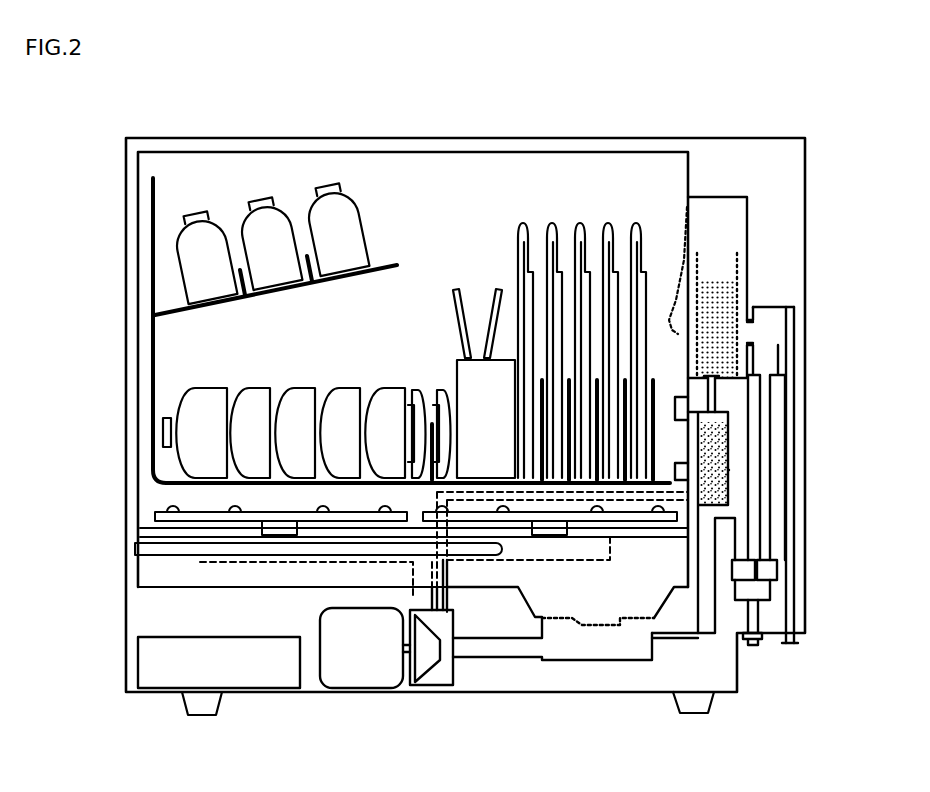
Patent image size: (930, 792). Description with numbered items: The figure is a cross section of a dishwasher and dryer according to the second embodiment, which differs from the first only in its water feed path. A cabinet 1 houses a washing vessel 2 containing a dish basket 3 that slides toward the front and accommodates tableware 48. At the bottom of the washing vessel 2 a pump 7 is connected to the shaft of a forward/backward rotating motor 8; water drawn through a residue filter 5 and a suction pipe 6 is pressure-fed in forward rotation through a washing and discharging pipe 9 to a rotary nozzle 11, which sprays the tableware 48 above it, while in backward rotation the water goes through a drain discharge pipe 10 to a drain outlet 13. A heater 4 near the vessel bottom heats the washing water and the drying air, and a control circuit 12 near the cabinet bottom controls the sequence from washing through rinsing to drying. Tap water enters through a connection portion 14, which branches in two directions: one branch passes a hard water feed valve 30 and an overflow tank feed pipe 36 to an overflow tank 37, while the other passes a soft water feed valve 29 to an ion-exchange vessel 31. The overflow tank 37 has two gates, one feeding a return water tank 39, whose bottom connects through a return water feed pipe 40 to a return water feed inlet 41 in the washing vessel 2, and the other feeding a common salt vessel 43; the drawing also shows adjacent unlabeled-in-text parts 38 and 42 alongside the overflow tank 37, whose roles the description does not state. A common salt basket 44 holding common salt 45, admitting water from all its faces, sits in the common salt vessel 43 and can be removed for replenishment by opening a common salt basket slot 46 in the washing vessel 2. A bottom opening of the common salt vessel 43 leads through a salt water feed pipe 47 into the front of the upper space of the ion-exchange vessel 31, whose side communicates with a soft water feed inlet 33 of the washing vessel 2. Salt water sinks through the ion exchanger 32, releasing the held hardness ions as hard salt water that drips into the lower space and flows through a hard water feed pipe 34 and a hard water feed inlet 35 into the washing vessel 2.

The cabinet 1 is at (125, 156).
The washing vessel 2 is at (137, 222).
The dish basket 3 is at (151, 345).
The heater 4 is at (280, 545).
The residue filter 5 is at (596, 626).
The suction pipe 6 is at (510, 648).
The pump 7 is at (440, 676).
The motor 8 is at (345, 672).
The washing and discharging pipe 9 is at (420, 600).
The drain discharge pipe 10 is at (443, 600).
The rotary nozzle 11 is at (156, 517).
The control circuit 12 is at (162, 672).
The drain outlet 13 is at (795, 643).
The connection portion 14 is at (755, 646).
The soft water feed valve 29 is at (745, 568).
The hard water feed valve 30 is at (768, 570).
The ion-exchange vessel 31 is at (688, 413).
The ion exchanger 32 is at (728, 478).
The soft water feed inlet 33 is at (713, 398).
The hard water feed pipe 34 is at (670, 638).
The hard water feed inlet 35 is at (640, 637).
The overflow tank feed pipe 36 is at (767, 508).
The overflow tank 37 is at (781, 333).
The water inlet pipe 38 is at (780, 350).
The return water tank 39 is at (794, 367).
The return water feed pipe 40 is at (686, 466).
The return water feed inlet 41 is at (728, 430).
The bracket 42 is at (754, 332).
The common salt vessel 43 is at (748, 214).
The common salt basket 44 is at (738, 266).
The common salt 45 is at (722, 294).
The common salt basket slot 46 is at (680, 263).
The salt water feed pipe 47 is at (716, 387).
The tableware 48 is at (195, 408).